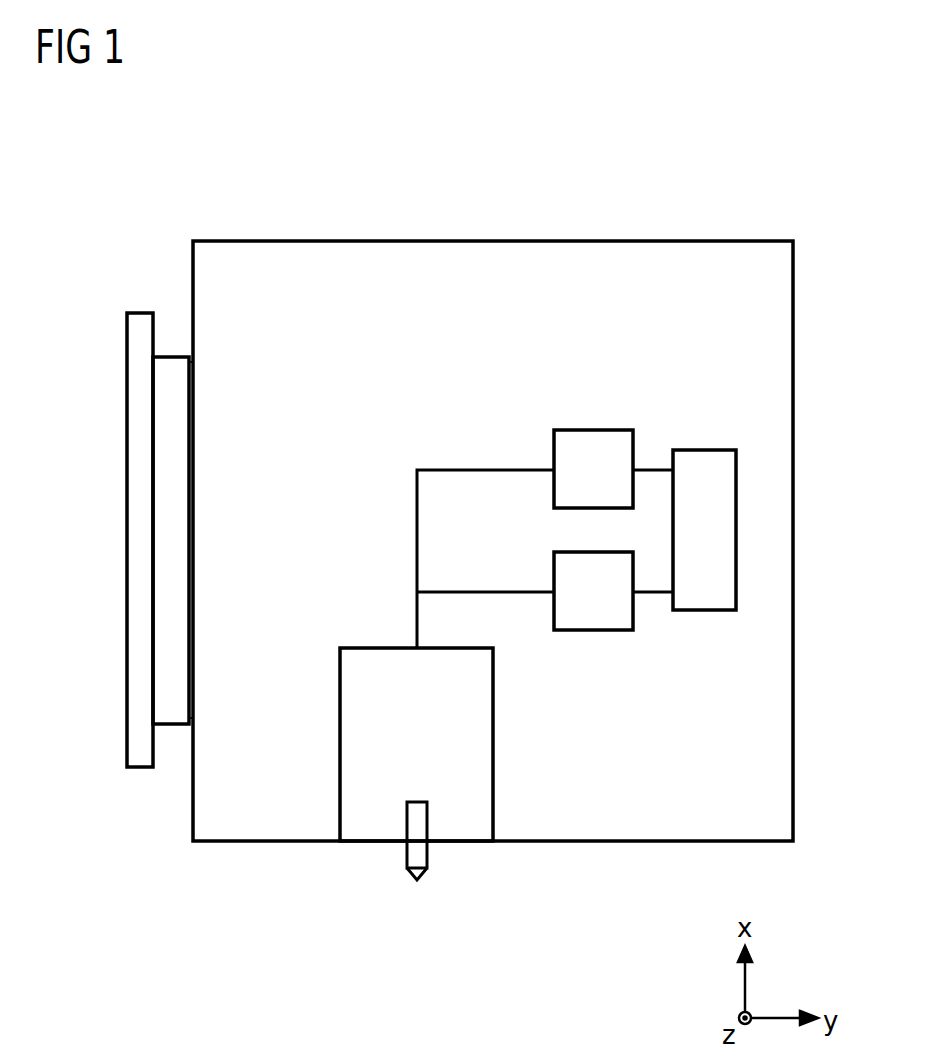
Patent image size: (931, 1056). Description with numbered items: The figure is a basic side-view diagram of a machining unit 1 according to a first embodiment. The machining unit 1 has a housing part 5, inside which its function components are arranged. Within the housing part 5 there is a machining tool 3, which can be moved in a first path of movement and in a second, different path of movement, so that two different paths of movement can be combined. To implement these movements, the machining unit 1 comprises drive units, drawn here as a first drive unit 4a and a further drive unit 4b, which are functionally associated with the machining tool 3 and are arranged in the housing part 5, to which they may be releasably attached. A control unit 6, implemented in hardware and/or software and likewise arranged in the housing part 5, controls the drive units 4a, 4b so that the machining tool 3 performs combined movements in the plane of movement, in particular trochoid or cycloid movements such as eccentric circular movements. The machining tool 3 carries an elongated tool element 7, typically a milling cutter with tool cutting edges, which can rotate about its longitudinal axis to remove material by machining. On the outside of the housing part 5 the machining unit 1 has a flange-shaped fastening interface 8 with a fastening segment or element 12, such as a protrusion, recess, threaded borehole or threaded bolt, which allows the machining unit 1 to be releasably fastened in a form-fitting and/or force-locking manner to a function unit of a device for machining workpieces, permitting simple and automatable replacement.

The machining unit 1 is at (400, 162).
The housing part 5 is at (672, 240).
The fastening interface 8 is at (145, 275).
The fastening segment or element 12 is at (127, 577).
The machining tool 3 is at (340, 712).
The tool element 7 is at (428, 857).
The first drive unit 4a is at (592, 430).
The first drive unit 4b is at (592, 632).
The control unit 6 is at (707, 450).